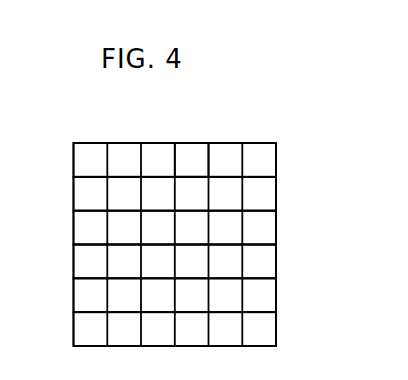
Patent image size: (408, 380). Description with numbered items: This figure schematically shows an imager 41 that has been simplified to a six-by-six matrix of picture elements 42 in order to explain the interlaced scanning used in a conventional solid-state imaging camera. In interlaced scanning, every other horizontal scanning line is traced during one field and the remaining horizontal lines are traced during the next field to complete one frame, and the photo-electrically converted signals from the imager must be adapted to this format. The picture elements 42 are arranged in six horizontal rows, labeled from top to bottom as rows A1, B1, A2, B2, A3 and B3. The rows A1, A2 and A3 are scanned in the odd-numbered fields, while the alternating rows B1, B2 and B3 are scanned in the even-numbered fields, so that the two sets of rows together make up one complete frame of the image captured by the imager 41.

The imager 41 is at (272, 187).
The picture elements 42 is at (190, 148).
The horizontal row of picture elements A1 is at (161, 160).
The horizontal row of picture elements B1 is at (161, 194).
The horizontal row of picture elements A2 is at (161, 228).
The horizontal row of picture elements B2 is at (161, 263).
The horizontal row of picture elements A3 is at (161, 295).
The horizontal row of picture elements B3 is at (161, 329).